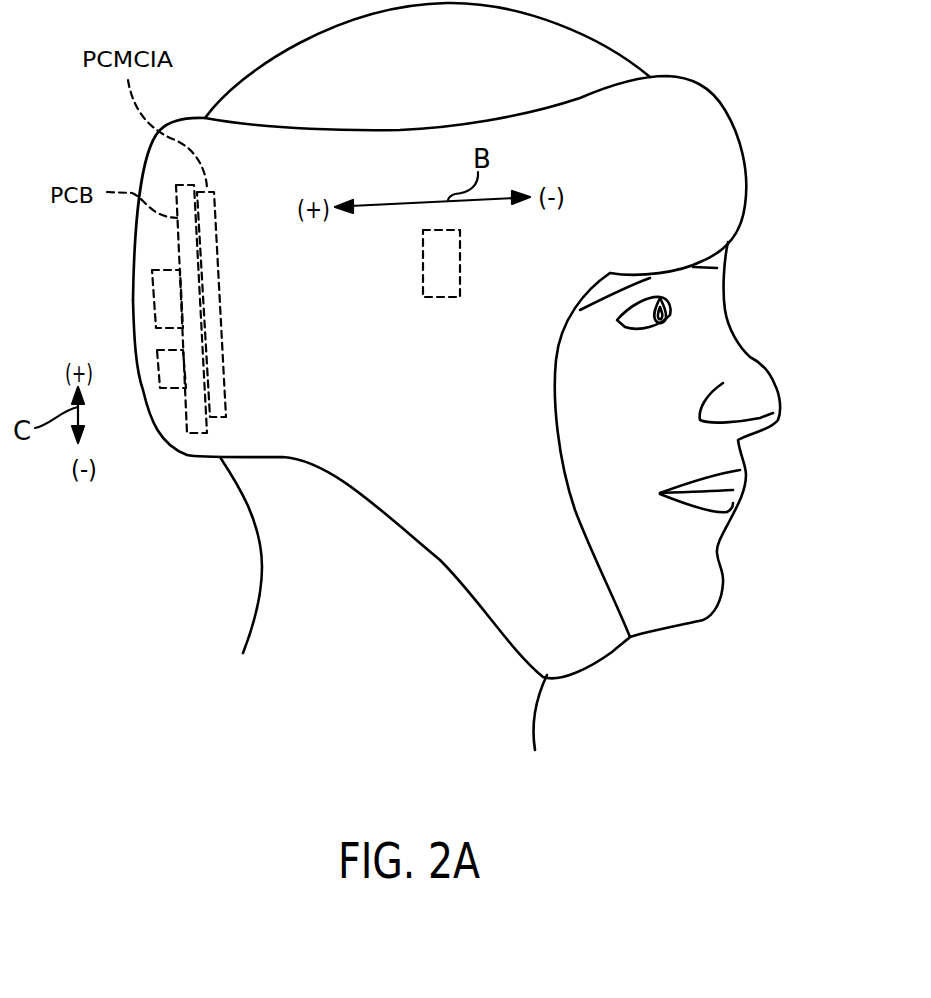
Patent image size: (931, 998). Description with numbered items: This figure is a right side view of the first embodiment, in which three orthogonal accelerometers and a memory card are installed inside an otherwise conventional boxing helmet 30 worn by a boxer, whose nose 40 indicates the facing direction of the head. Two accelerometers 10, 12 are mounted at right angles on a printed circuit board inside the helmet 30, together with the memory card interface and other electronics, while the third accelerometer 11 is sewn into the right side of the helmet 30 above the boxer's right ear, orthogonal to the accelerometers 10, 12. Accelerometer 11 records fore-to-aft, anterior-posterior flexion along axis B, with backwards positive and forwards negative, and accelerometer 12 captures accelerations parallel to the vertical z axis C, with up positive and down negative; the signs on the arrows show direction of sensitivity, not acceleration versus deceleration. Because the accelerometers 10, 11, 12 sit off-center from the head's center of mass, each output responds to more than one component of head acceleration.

The accelerometer 10 is at (152, 287).
The accelerometer 11 is at (460, 280).
The accelerometer 12 is at (173, 390).
The helmet 30 is at (705, 117).
The nose 40 is at (767, 362).